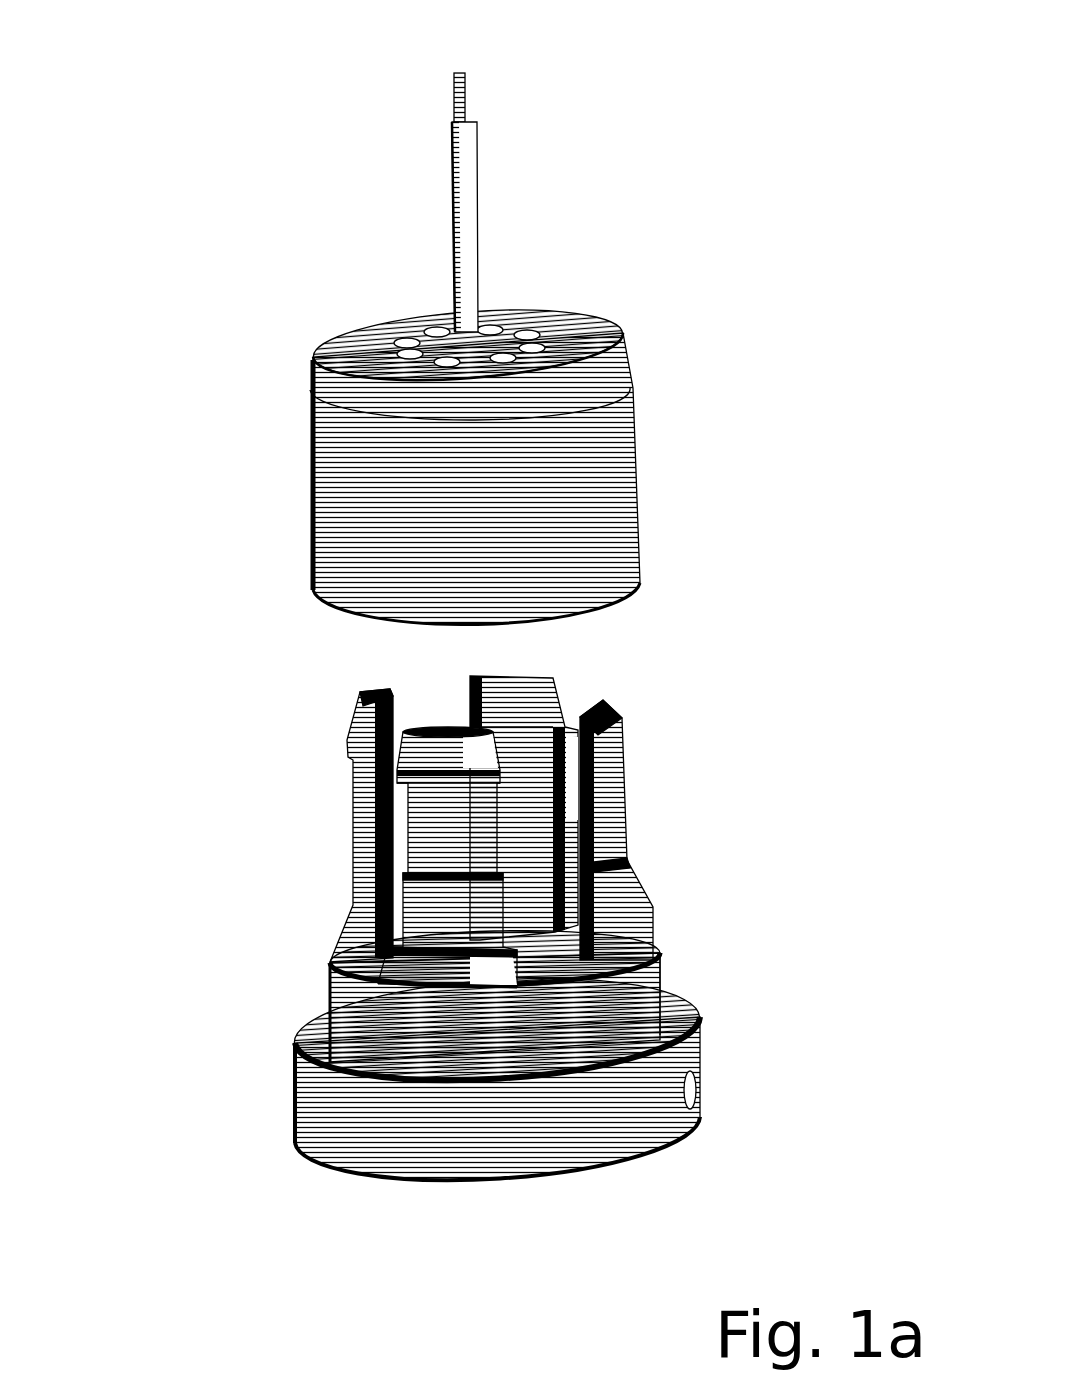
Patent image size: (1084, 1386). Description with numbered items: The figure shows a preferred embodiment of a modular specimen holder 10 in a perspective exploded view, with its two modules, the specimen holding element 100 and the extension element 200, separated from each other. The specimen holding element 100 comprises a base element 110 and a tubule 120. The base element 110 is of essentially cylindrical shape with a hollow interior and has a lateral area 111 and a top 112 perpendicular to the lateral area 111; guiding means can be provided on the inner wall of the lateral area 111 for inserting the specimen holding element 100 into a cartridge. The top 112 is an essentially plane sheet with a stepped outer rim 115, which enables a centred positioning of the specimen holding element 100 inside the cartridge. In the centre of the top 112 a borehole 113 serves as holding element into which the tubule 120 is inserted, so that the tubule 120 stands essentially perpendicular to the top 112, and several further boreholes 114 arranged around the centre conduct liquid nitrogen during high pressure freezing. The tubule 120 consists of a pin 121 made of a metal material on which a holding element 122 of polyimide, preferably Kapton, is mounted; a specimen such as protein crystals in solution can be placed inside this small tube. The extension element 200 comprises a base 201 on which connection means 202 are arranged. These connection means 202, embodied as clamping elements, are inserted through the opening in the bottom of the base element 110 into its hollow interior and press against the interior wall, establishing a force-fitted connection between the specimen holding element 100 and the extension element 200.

The modular specimen holder 10 is at (205, 98).
The specimen holding element 100 is at (250, 352).
The base element 110 is at (735, 330).
The lateral area 111 is at (612, 478).
The top 112 is at (580, 332).
The borehole 113 is at (440, 340).
The boreholes 114 is at (550, 324).
The stepped outer rim 115 is at (628, 357).
The tubule 120 is at (548, 138).
The pin 121 is at (460, 240).
The holding element 122 is at (457, 103).
The extension element 200 is at (250, 800).
The base 201 is at (700, 1063).
The connection means 202 is at (605, 830).